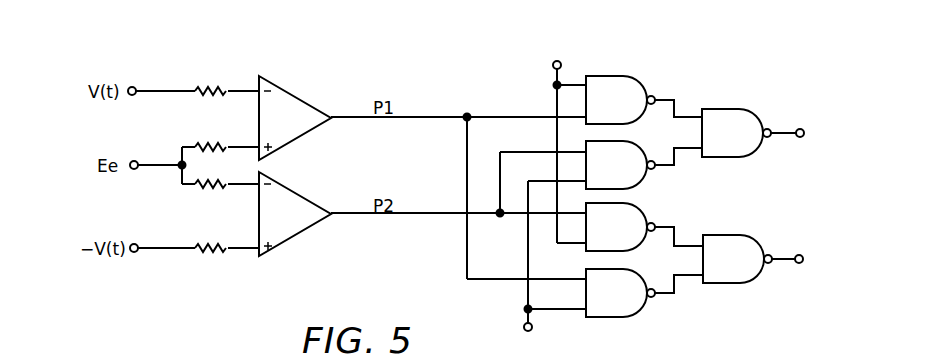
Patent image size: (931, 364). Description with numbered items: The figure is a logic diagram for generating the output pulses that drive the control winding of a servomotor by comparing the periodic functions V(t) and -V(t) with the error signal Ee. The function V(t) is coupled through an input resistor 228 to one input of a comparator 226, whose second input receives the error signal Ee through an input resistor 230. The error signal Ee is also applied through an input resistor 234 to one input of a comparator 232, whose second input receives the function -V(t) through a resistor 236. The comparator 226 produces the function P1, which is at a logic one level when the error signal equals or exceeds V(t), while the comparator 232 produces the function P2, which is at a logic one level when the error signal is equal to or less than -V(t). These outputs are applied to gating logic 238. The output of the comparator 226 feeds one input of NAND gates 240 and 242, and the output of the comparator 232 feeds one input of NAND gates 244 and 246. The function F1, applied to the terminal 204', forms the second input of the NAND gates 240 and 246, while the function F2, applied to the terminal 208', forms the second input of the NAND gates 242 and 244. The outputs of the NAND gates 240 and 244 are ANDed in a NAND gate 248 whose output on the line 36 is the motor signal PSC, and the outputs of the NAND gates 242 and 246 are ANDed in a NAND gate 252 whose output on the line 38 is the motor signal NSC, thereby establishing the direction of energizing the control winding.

The input resistor 228 is at (201, 86).
The input resistor 230 is at (202, 143).
The input resistor 234 is at (210, 200).
The resistor 236 is at (203, 253).
The comparator 226 is at (300, 112).
The comparator 232 is at (300, 210).
The terminal 204' is at (559, 133).
The terminal 208' is at (561, 266).
The NAND gate 240 is at (627, 93).
The NAND gate 244 is at (637, 166).
The NAND gate 246 is at (630, 226).
The NAND gate 242 is at (621, 293).
The NAND gate 248 is at (740, 118).
The NAND gate 252 is at (725, 258).
The gating logic 238 is at (763, 198).
The line 36 is at (801, 128).
The line 38 is at (800, 254).